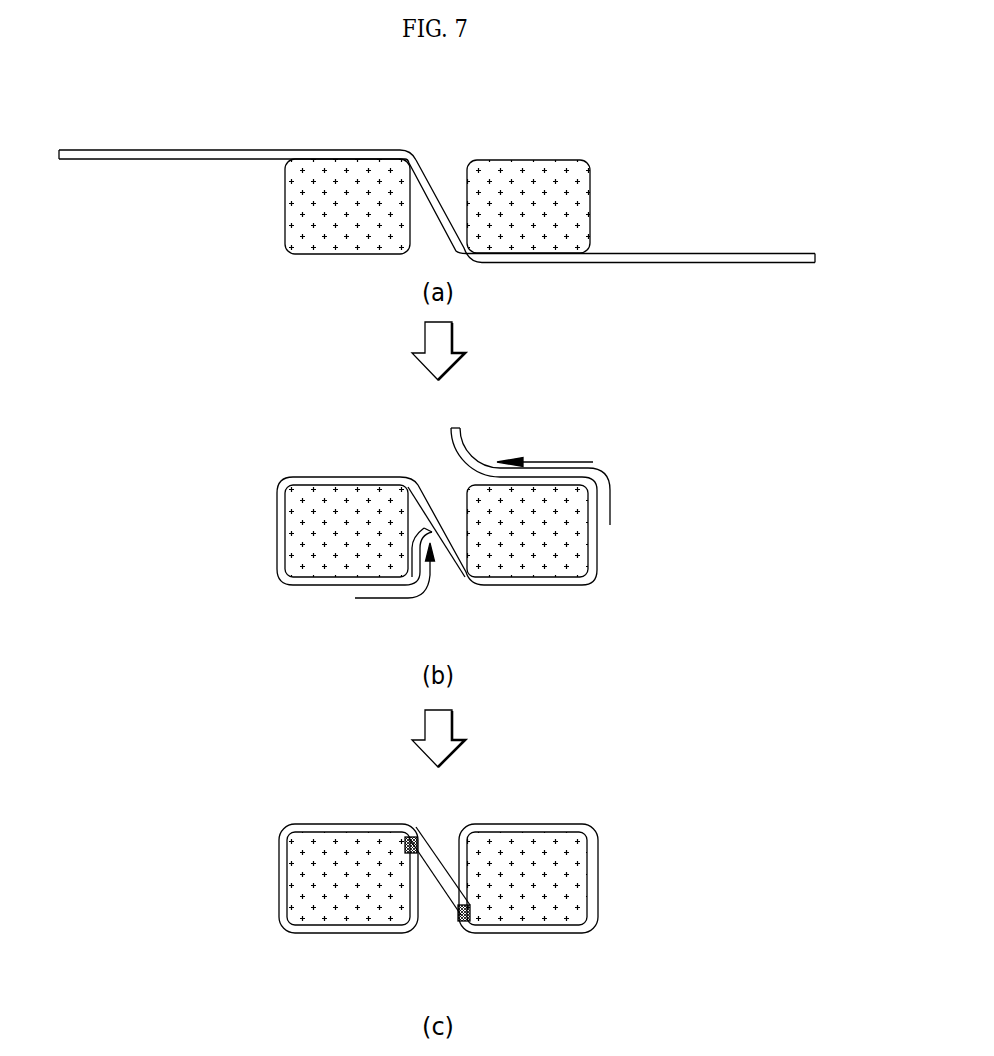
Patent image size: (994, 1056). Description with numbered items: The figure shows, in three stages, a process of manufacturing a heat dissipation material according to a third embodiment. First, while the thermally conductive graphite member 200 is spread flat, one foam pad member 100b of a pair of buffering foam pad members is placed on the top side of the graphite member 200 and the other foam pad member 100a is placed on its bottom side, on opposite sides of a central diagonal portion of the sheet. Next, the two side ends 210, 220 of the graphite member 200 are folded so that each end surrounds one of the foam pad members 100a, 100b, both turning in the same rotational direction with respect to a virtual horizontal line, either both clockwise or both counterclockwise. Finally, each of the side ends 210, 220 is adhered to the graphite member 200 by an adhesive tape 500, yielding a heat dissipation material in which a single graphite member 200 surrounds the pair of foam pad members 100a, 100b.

The foam pad member 100a is at (347, 197).
The foam pad member 100b is at (527, 168).
The graphite member 200 is at (418, 540).
The side end of the graphite member 210 is at (63, 150).
The side end of the graphite member 220 is at (812, 252).
The adhesive tape 500 is at (408, 836).